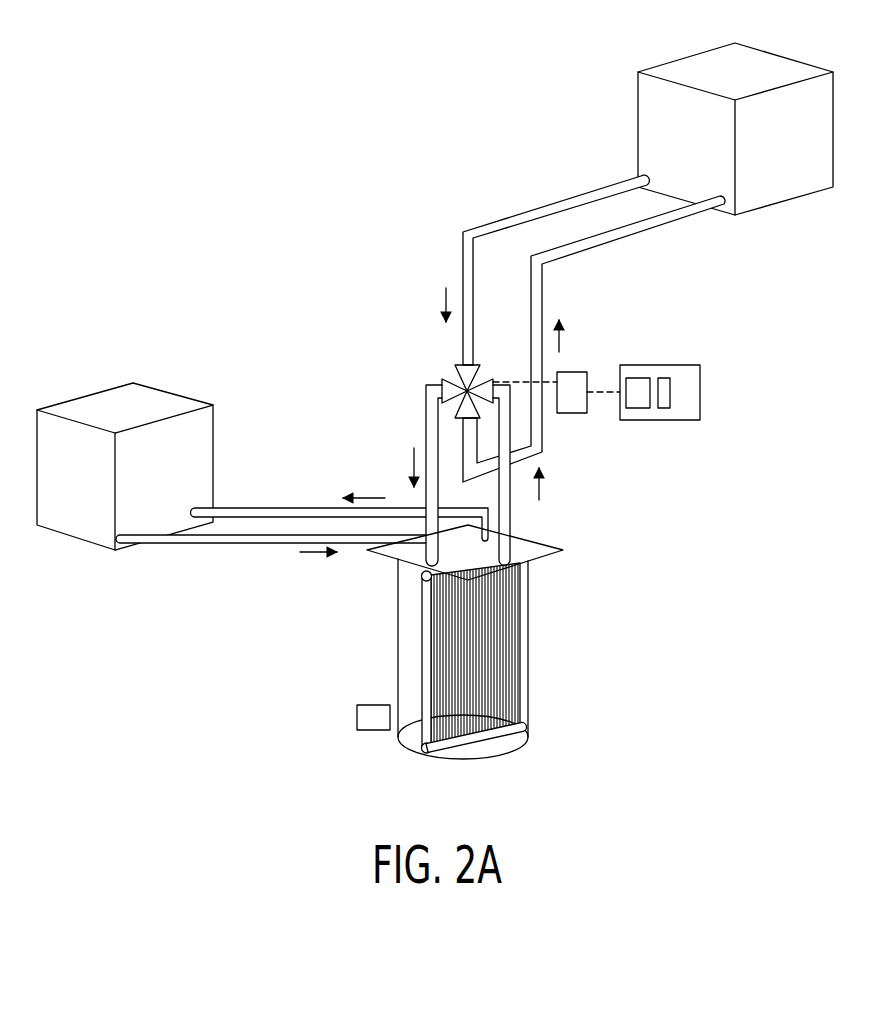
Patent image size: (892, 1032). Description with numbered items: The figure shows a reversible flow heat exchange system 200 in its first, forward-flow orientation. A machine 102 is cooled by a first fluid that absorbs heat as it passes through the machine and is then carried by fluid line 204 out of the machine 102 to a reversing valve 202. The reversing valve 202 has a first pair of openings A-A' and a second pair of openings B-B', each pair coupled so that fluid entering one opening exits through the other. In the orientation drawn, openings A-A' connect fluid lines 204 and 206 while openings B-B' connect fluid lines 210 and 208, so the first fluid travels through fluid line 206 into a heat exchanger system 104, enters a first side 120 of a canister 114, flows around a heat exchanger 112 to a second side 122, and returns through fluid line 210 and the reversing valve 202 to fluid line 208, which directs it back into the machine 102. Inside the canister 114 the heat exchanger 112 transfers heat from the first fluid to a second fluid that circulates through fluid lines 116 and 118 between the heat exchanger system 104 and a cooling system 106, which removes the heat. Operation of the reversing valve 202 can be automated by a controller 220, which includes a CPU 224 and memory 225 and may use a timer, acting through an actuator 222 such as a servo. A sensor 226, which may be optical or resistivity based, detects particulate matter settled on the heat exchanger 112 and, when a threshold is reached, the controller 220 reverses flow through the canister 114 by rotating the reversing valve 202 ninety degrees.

The machine 102 is at (702, 65).
The heat exchanger system 104 is at (480, 642).
The cooling system 106 is at (113, 400).
The heat exchanger 112 is at (427, 698).
The canister 114 is at (397, 663).
The fluid line 116 is at (192, 543).
The fluid line 118 is at (270, 508).
The first side 120 is at (407, 628).
The second side 122 is at (523, 623).
The reversible flow heat exchange system 200 is at (266, 212).
The reversing valve 202 is at (442, 352).
The fluid line 204 is at (565, 205).
The fluid line 206 is at (498, 357).
The fluid line 208 is at (633, 230).
The fluid line 210 is at (508, 497).
The controller 220 is at (655, 400).
The actuator 222 is at (572, 413).
The CPU 224 is at (632, 378).
The memory 225 is at (664, 378).
The sensor 226 is at (355, 718).